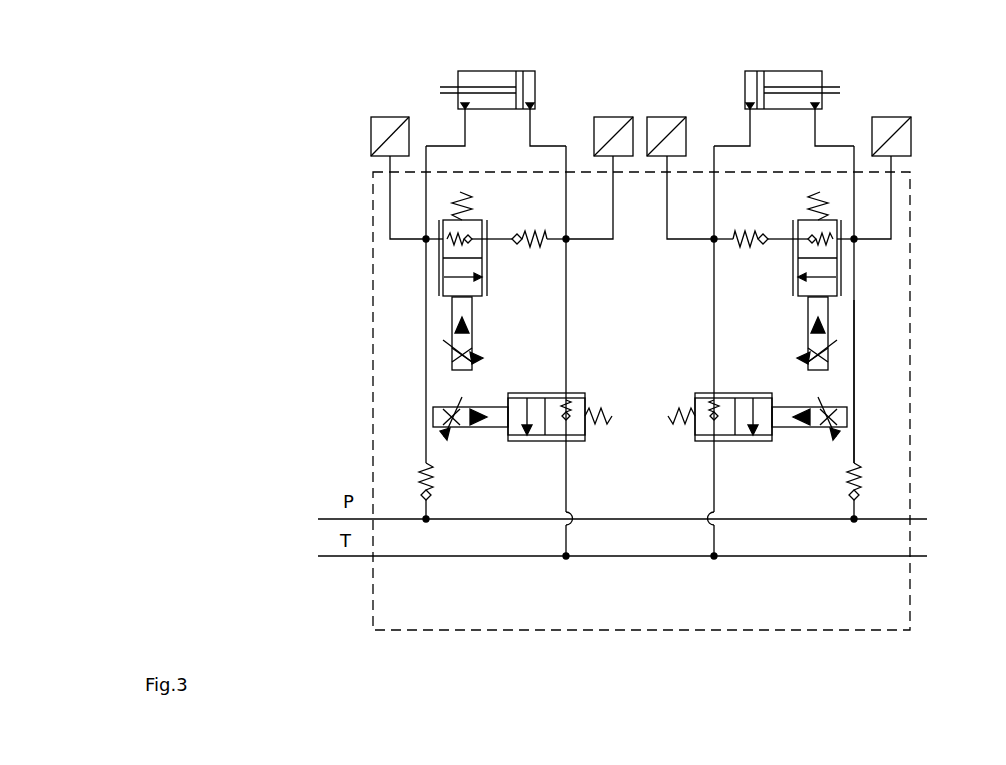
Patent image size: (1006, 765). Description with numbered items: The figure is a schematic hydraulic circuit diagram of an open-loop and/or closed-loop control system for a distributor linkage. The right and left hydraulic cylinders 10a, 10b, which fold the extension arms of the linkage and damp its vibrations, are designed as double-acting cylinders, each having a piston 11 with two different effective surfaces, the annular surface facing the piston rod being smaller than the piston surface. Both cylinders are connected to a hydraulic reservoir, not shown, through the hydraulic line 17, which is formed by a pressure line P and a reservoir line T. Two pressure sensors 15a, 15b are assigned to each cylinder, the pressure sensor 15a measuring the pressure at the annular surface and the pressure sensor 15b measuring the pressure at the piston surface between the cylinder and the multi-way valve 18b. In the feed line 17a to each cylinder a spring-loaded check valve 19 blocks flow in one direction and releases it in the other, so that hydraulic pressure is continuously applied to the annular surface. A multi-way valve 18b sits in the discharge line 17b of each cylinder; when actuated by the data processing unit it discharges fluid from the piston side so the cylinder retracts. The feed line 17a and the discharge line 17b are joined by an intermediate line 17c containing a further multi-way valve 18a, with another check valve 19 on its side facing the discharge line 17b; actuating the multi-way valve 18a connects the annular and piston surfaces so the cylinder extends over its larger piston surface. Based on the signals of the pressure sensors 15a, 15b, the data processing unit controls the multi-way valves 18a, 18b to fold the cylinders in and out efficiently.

The right hydraulic cylinder 10a is at (492, 70).
The left hydraulic cylinder 10b is at (792, 72).
The piston 11 is at (467, 90).
The pressure sensor 15a is at (373, 117).
The pressure sensor 15b is at (612, 117).
The hydraulic line 17 is at (854, 375).
The feed line 17a is at (426, 363).
The discharge line 17b is at (566, 345).
The intermediate line 17c is at (499, 239).
The multi-way valve 18a is at (460, 276).
The multi-way valve 18b is at (527, 398).
The check valve 19 is at (521, 230).